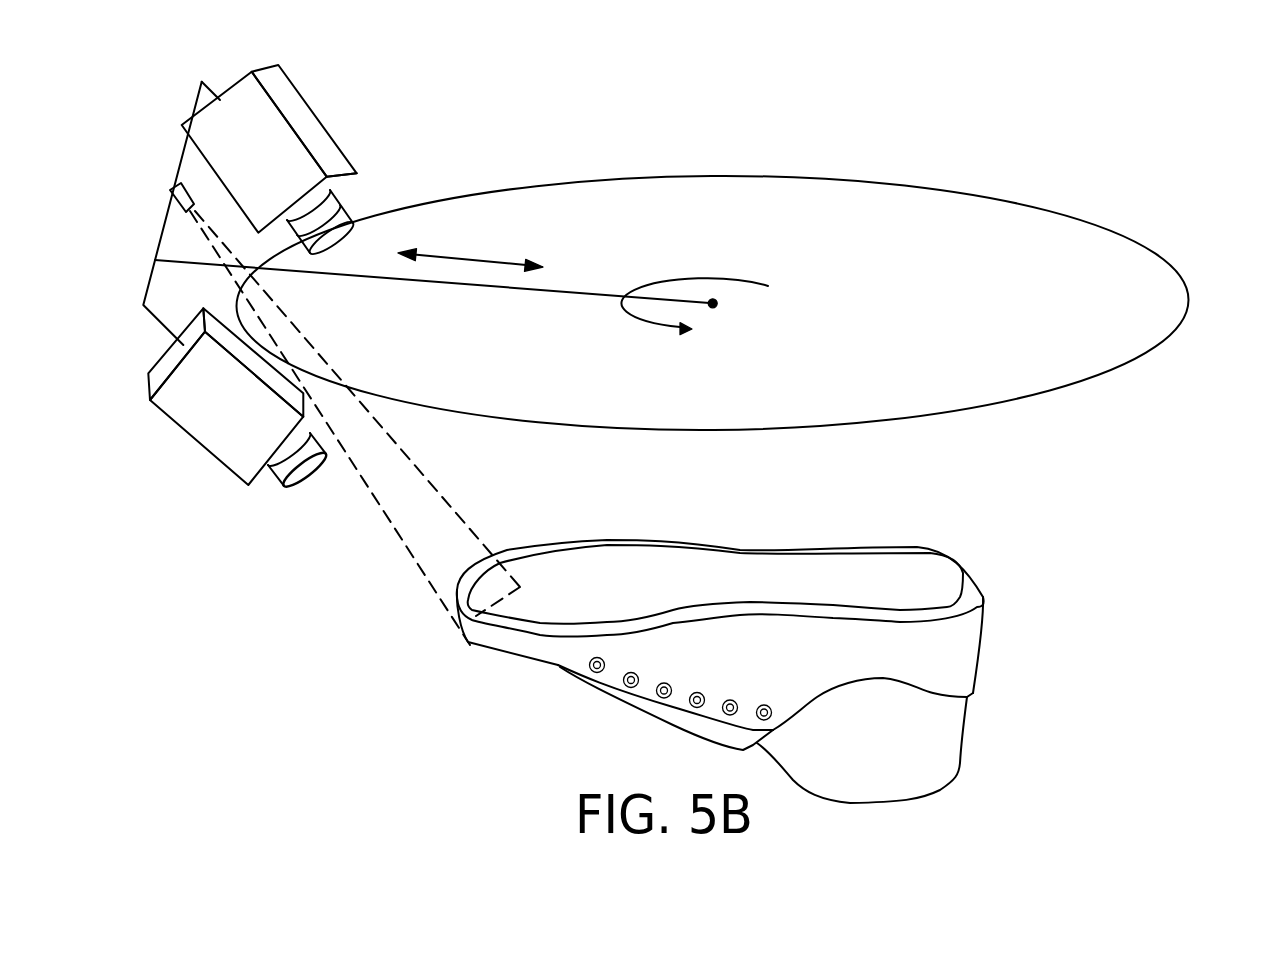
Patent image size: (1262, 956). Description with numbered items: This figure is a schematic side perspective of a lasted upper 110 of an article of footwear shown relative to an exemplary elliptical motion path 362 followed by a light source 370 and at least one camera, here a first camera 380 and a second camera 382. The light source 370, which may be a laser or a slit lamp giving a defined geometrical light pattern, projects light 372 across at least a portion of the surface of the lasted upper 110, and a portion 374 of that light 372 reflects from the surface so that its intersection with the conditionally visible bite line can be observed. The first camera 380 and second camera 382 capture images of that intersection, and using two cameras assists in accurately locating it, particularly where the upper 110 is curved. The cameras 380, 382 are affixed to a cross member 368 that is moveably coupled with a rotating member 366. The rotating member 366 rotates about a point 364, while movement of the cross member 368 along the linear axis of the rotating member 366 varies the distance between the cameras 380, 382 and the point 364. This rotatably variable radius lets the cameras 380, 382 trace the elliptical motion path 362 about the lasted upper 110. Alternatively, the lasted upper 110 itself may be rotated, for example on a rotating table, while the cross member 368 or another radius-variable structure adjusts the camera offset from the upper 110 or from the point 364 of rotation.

The lasted upper 110 is at (991, 643).
The elliptical motion path 362 is at (1191, 292).
The point 364 is at (722, 309).
The rotating member 366 is at (567, 283).
The cross member 368 is at (136, 331).
The first light source 370 is at (180, 205).
The light 372 is at (396, 546).
The portion of light 374 is at (512, 599).
The first camera 380 is at (311, 107).
The second camera 382 is at (190, 438).